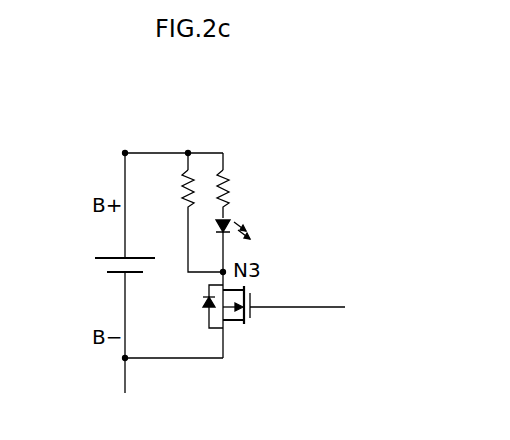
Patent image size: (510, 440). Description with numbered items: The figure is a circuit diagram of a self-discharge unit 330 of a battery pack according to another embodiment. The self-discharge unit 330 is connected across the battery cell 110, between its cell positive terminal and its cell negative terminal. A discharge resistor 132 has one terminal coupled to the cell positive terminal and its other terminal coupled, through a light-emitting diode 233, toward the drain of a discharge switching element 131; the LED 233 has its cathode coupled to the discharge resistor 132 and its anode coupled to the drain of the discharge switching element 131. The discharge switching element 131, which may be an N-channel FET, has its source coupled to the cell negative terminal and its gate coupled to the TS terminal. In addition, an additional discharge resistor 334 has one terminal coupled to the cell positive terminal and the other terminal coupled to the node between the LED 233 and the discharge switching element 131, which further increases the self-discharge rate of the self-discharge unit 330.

The battery cell 110 is at (93, 264).
The self-discharge unit 330 is at (247, 124).
The additional discharge resistor 334 is at (180, 176).
The discharge resistor 132 is at (232, 178).
The light-emitting diode 233 is at (229, 216).
The discharge switching element 131 is at (252, 315).